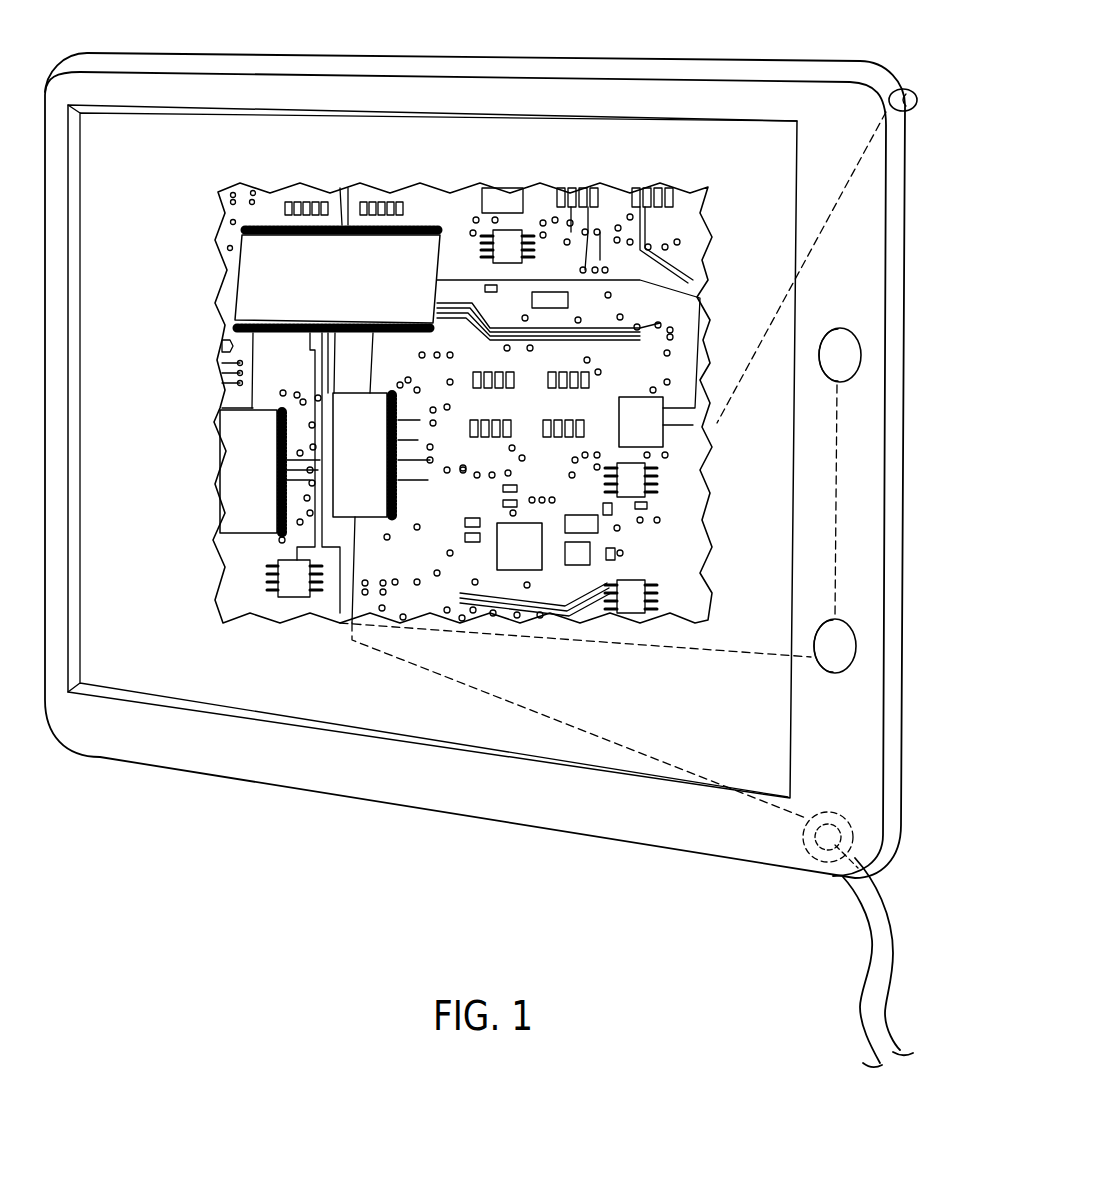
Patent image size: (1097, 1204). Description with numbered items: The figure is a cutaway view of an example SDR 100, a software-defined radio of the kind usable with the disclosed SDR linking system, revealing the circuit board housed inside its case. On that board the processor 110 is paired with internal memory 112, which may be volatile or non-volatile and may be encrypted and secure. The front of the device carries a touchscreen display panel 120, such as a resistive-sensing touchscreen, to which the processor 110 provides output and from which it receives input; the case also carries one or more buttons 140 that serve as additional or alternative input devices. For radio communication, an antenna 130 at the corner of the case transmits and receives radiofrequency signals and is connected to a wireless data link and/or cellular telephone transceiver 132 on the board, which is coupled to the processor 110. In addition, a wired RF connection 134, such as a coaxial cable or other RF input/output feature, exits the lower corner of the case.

The SDR 100 is at (322, 53).
The processor 110 is at (243, 282).
The internal memory 112 is at (233, 492).
The touchscreen display panel 120 is at (613, 125).
The antenna 130 is at (910, 98).
The wireless data link and/or cellular telephone transceiver 132 is at (661, 435).
The wired RF connection 134 is at (878, 947).
The buttons 140 is at (852, 360).